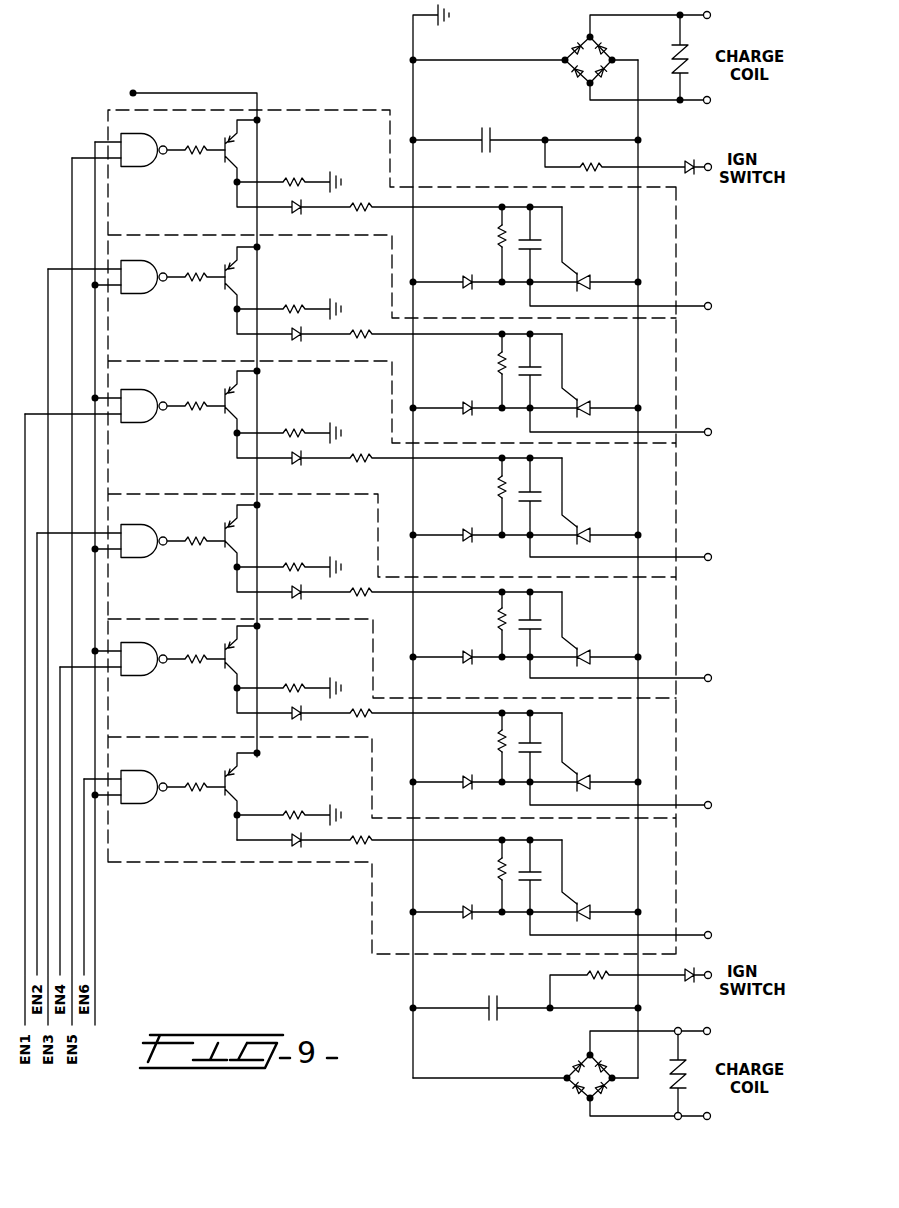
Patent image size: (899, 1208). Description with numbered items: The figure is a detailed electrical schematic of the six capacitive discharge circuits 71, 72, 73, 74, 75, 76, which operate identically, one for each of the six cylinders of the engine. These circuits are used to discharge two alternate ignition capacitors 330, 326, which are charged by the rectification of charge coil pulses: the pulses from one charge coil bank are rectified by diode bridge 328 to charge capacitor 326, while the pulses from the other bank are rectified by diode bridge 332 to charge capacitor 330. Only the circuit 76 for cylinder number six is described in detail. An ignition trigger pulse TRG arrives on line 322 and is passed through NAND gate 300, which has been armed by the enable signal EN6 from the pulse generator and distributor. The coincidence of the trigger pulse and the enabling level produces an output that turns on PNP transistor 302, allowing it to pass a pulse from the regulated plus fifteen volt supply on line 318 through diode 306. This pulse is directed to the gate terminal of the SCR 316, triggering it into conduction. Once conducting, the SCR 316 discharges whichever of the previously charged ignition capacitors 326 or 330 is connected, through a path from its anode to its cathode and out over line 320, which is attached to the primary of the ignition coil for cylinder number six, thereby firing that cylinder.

The capacitive discharge circuit 71 is at (677, 515).
The capacitive discharge circuit 72 is at (677, 635).
The capacitive discharge circuit 73 is at (677, 390).
The capacitive discharge circuit 74 is at (677, 762).
The capacitive discharge circuit 75 is at (677, 263).
The capacitive discharge circuit 76 is at (594, 891).
The NAND gate 300 is at (138, 771).
The PNP transistor 302 is at (242, 774).
The diode 306 is at (298, 841).
The SCR 316 is at (578, 902).
The line 318 is at (213, 93).
The line 320 is at (657, 934).
The line 322 is at (96, 928).
The ignition capacitor 326 is at (500, 1004).
The diode bridge 328 is at (582, 1093).
The ignition capacitor 330 is at (493, 140).
The diode bridge 332 is at (578, 76).